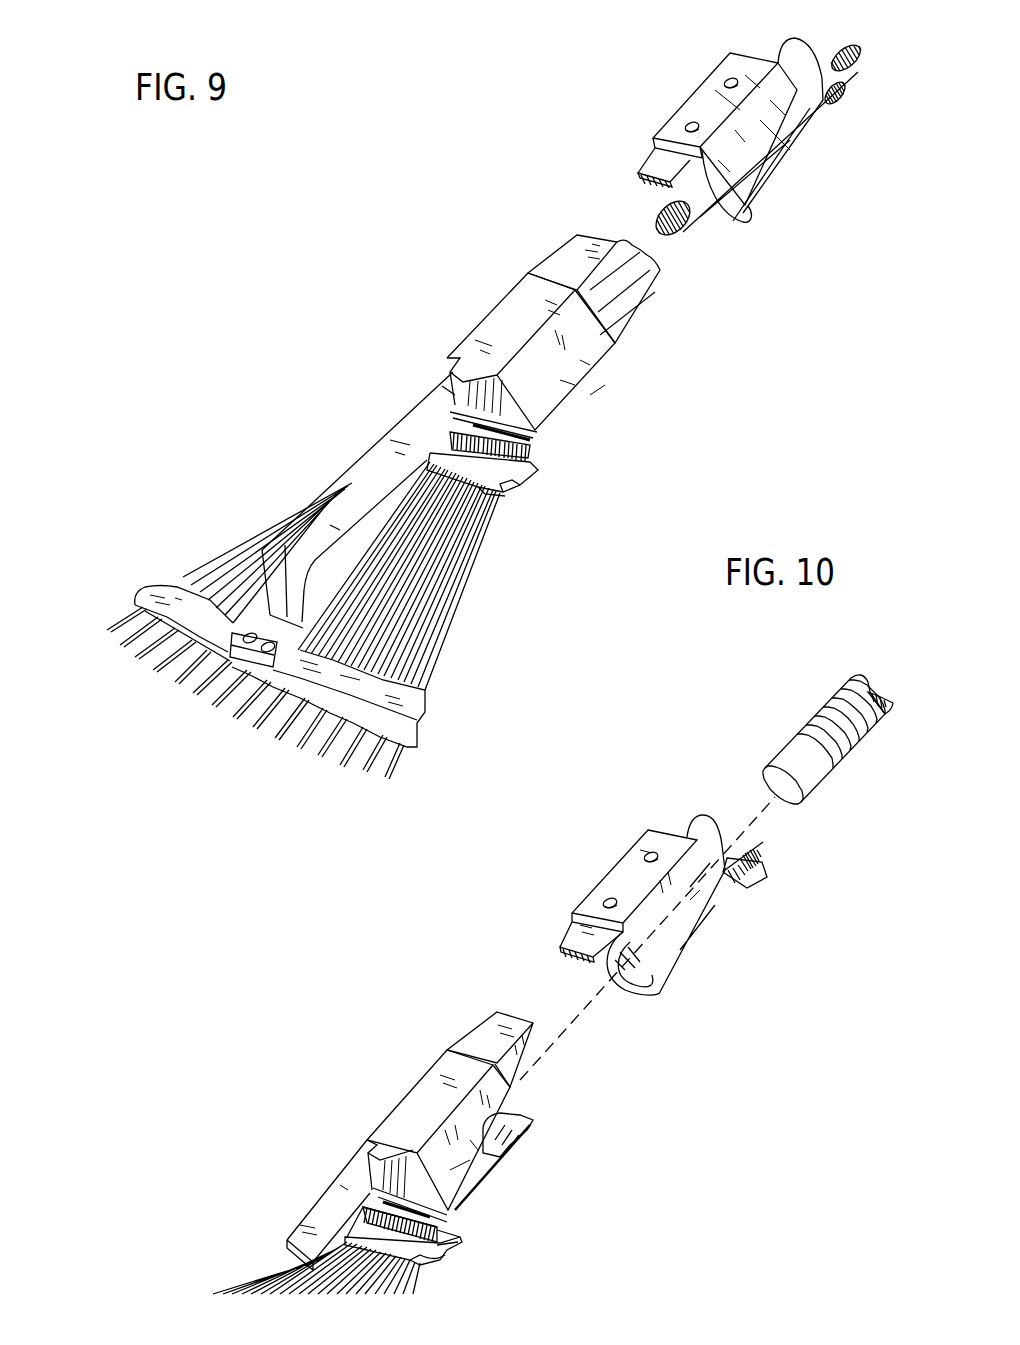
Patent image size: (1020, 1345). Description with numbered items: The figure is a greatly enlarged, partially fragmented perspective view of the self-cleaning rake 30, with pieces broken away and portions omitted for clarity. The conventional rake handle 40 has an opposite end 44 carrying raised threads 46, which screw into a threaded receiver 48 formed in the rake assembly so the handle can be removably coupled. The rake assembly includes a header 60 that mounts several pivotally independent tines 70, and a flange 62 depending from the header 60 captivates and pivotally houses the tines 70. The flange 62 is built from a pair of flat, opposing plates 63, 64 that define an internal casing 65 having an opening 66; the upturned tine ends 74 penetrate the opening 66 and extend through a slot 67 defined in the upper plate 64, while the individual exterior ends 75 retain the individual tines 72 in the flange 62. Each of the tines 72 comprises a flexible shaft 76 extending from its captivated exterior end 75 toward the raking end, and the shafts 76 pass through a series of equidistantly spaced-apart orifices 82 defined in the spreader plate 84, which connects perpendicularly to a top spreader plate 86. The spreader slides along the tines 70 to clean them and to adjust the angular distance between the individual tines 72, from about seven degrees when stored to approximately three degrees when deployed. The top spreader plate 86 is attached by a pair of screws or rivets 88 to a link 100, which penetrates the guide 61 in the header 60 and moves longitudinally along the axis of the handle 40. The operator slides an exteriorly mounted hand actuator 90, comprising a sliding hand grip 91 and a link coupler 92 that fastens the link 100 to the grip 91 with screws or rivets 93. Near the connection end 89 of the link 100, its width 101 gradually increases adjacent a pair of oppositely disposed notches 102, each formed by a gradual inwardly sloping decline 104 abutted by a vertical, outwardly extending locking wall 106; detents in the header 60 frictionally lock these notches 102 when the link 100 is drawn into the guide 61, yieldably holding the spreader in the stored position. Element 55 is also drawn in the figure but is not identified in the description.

In FIG. 9, the self-cleaning rake 30 is at (448, 152).
In FIG. 9, the rake handle 40 is at (850, 43).
In FIG. 10, the rake handle 40 is at (872, 676).
In FIG. 10, the opposite end 44 is at (830, 684).
In FIG. 10, the raised threads 46 is at (833, 768).
In FIG. 10, the threaded receiver 48 is at (510, 1113).
In FIG. 9, the strain relief strap 55 is at (313, 500).
In FIG. 9, the header 60 is at (472, 306).
In FIG. 10, the header 60 is at (525, 1155).
In FIG. 9, the guide 61 is at (457, 356).
In FIG. 10, the guide 61 is at (373, 1143).
In FIG. 9, the flange 62 is at (539, 493).
In FIG. 10, the flange 62 is at (473, 1242).
In FIG. 9, the plate 63 is at (498, 492).
In FIG. 10, the plate 63 is at (412, 1265).
In FIG. 9, the upper plate 64 is at (528, 473).
In FIG. 10, the upper plate 64 is at (458, 1240).
In FIG. 9, the internal casing 65 is at (530, 457).
In FIG. 10, the internal casing 65 is at (452, 1249).
In FIG. 9, the opening 66 is at (511, 485).
In FIG. 9, the slot 67 is at (530, 450).
In FIG. 10, the slot 67 is at (440, 1222).
In FIG. 9, the tines 70 is at (462, 590).
In FIG. 10, the tines 70 is at (213, 1282).
In FIG. 9, the individual tines 72 is at (425, 628).
In FIG. 10, the individual tines 72 is at (245, 1267).
In FIG. 9, the upturned tine ends 74 is at (438, 436).
In FIG. 10, the upturned tine ends 74 is at (362, 1216).
In FIG. 9, the exterior ends 75 is at (453, 422).
In FIG. 10, the exterior ends 75 is at (385, 1199).
In FIG. 9, the flexible shafts 76 is at (257, 553).
In FIG. 9, the orifices 82 is at (235, 634).
In FIG. 9, the spreader plate 84 is at (138, 607).
In FIG. 9, the top spreader plate 86 is at (165, 573).
In FIG. 9, the screws or rivets 88 is at (247, 647).
In FIG. 9, the connection end 89 is at (266, 634).
In FIG. 9, the hand actuator 90 is at (778, 201).
In FIG. 10, the hand actuator 90 is at (707, 976).
In FIG. 9, the sliding hand grip 91 is at (803, 148).
In FIG. 10, the sliding hand grip 91 is at (713, 917).
In FIG. 9, the link coupler 92 is at (750, 62).
In FIG. 10, the link coupler 92 is at (693, 853).
In FIG. 9, the screws or rivets 93 is at (726, 80).
In FIG. 10, the screws or rivets 93 is at (648, 850).
In FIG. 9, the link 100 is at (572, 233).
In FIG. 10, the link 100 is at (482, 1010).
In FIG. 9, the width 101 is at (450, 357).
In FIG. 10, the notches 102 is at (348, 1155).
In FIG. 9, the inwardly sloping decline 104 is at (488, 414).
In FIG. 10, the inwardly sloping decline 104 is at (340, 1177).
In FIG. 9, the locking wall 106 is at (440, 386).
In FIG. 10, the locking wall 106 is at (367, 1140).